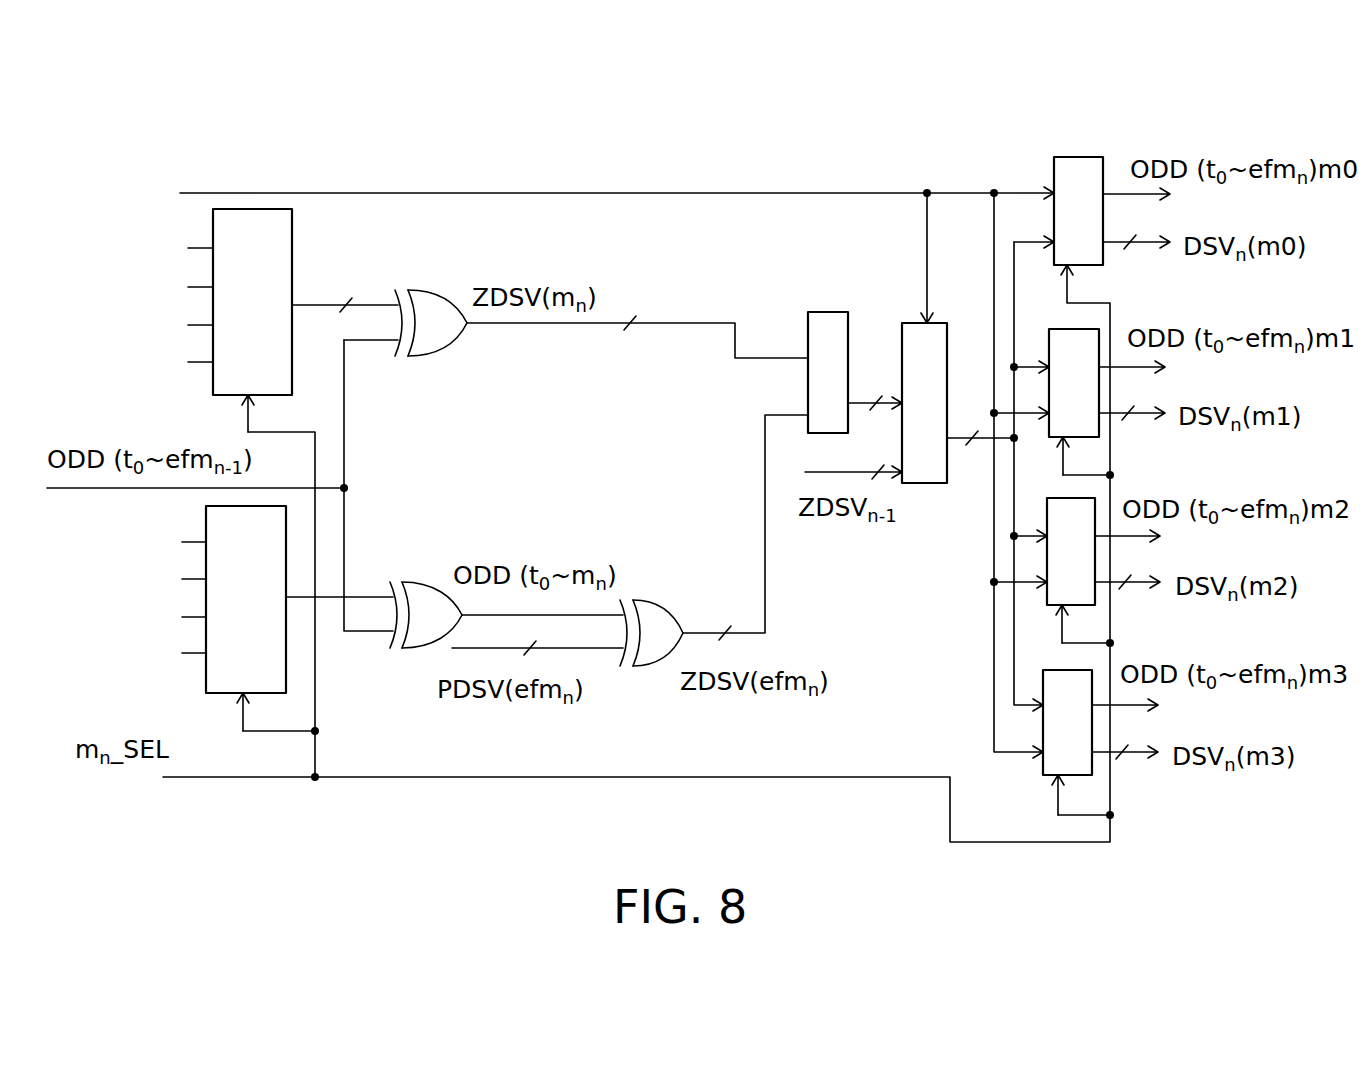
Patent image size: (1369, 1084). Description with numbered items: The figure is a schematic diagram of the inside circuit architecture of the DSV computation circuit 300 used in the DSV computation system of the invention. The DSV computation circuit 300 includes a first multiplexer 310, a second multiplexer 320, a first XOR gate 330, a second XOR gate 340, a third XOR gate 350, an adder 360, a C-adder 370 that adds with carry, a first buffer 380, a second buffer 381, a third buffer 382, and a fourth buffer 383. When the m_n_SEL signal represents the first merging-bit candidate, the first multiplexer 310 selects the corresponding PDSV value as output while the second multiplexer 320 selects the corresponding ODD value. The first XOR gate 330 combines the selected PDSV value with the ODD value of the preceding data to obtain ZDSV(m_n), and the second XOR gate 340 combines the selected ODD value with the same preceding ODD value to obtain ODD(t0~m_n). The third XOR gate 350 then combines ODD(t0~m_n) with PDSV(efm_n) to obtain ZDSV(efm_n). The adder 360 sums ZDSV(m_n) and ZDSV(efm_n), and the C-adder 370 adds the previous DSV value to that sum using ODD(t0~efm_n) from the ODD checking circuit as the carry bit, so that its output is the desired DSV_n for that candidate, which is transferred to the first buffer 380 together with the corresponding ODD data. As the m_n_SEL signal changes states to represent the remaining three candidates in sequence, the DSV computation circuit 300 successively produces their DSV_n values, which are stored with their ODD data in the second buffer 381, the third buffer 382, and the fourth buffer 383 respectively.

The DSV computation circuit 300 is at (820, 178).
The first multiplexer 310 is at (292, 257).
The second multiplexer 320 is at (287, 548).
The first XOR gate 330 is at (440, 338).
The second XOR gate 340 is at (433, 600).
The third XOR gate 350 is at (660, 618).
The adder 360 is at (830, 312).
The C-adder 370 is at (925, 483).
The first buffer 380 is at (1066, 157).
The second buffer 381 is at (1052, 330).
The third buffer 382 is at (1047, 605).
The fourth buffer 383 is at (1040, 770).